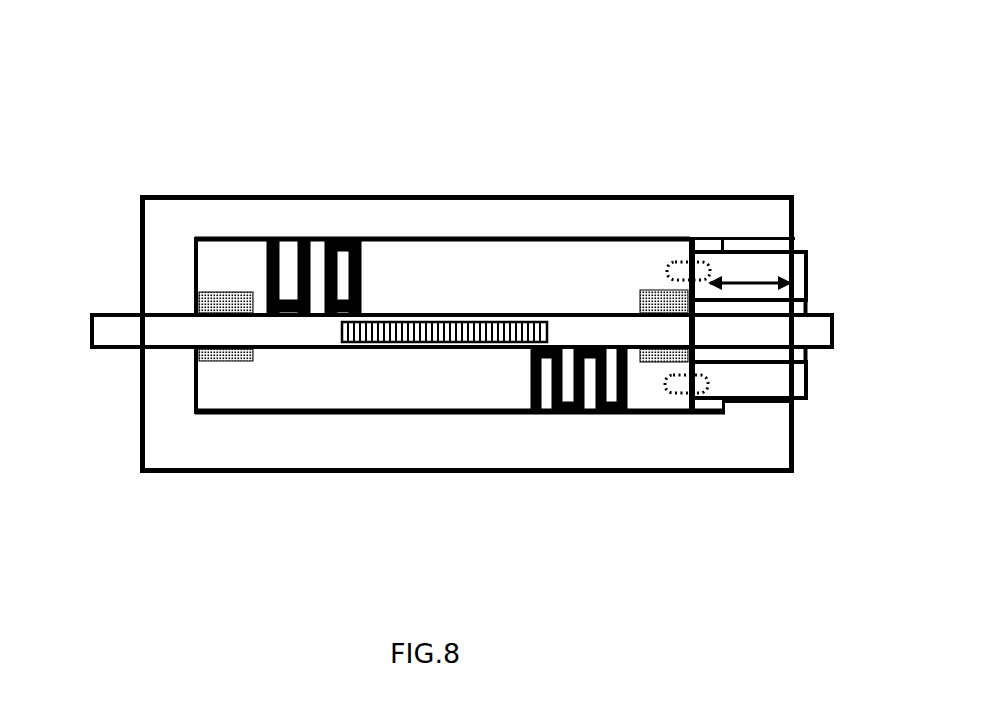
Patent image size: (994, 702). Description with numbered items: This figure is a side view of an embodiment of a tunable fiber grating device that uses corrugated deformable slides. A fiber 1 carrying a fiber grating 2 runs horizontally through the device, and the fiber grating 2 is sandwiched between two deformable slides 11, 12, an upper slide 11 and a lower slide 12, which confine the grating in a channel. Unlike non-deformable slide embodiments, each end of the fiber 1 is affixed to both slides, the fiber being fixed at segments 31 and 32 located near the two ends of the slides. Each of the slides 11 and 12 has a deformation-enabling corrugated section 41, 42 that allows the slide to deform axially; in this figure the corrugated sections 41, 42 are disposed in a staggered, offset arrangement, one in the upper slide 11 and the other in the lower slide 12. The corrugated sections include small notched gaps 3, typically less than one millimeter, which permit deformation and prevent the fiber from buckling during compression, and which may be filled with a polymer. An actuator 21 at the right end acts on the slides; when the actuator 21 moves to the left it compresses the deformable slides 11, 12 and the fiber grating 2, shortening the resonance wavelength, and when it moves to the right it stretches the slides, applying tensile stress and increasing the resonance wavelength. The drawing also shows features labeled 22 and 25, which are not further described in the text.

The fiber 1 is at (135, 330).
The fiber grating 2 is at (435, 330).
The notched gaps 3 is at (471, 325).
The deformable slide 11 is at (505, 267).
The deformable slide 12 is at (273, 387).
The actuator 21 is at (768, 263).
The clamp 22 is at (695, 268).
The housing base 25 is at (375, 440).
The segment 31 is at (653, 292).
The segment 32 is at (218, 293).
The corrugated section 41 is at (332, 237).
The corrugated section 42 is at (568, 360).